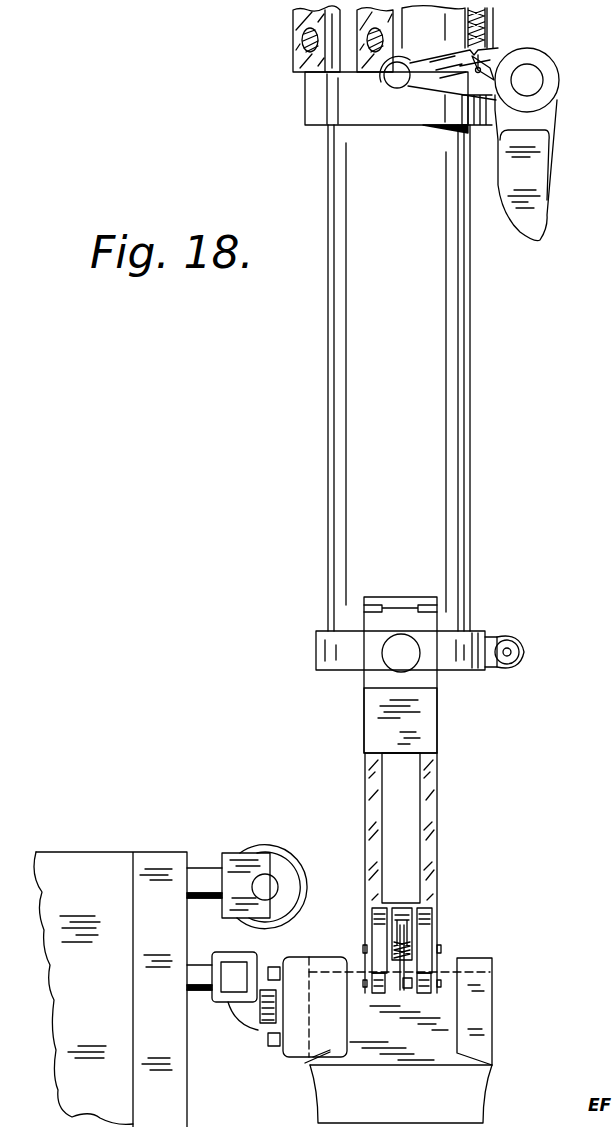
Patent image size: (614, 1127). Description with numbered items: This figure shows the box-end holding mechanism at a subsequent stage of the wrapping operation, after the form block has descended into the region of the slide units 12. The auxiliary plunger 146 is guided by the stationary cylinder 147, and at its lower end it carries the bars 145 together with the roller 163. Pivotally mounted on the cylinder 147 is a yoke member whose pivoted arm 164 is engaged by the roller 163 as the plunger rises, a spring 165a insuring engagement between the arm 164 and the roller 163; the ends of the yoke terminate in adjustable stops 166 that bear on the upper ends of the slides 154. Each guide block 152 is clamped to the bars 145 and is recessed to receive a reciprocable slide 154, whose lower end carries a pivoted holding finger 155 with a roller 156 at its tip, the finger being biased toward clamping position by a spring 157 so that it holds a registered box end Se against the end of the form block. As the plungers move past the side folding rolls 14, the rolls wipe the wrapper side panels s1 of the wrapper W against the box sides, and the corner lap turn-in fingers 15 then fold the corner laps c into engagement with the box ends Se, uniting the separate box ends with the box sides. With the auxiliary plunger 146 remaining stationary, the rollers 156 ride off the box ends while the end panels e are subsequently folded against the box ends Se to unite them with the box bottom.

The slide unit 12 is at (88, 868).
The side folding roll 14 is at (270, 843).
The corner lap turn-in finger 15 is at (297, 1038).
The bar 145 is at (390, 658).
The auxiliary plunger 146 is at (471, 520).
The cylinder 147 is at (318, 104).
The guide block 152 is at (423, 717).
The slide 154 is at (437, 804).
The holding finger 155 is at (380, 933).
The roller 156 is at (378, 996).
The spring 157 is at (397, 910).
The roller 163 is at (517, 670).
The pivoted arm 164 is at (536, 220).
The spring 165a is at (493, 50).
The adjustable stop 166 is at (389, 86).
The wrapper W is at (468, 967).
The wrapper side panel s1 is at (495, 987).
The box end Se is at (445, 983).
The corner lap c is at (313, 1057).
The end panel e is at (470, 1105).